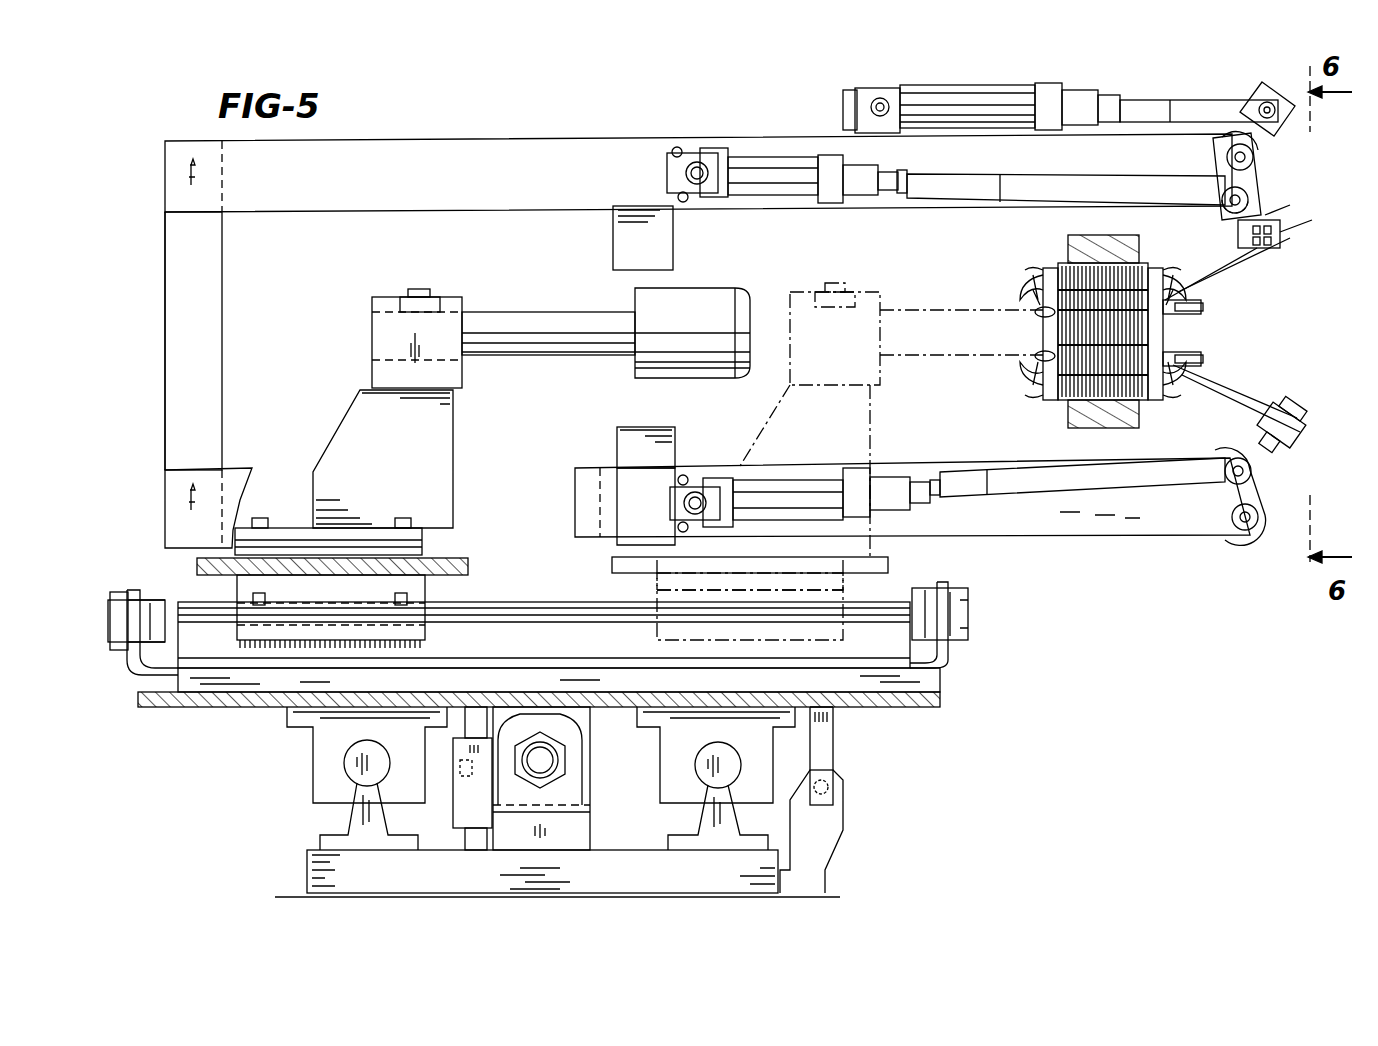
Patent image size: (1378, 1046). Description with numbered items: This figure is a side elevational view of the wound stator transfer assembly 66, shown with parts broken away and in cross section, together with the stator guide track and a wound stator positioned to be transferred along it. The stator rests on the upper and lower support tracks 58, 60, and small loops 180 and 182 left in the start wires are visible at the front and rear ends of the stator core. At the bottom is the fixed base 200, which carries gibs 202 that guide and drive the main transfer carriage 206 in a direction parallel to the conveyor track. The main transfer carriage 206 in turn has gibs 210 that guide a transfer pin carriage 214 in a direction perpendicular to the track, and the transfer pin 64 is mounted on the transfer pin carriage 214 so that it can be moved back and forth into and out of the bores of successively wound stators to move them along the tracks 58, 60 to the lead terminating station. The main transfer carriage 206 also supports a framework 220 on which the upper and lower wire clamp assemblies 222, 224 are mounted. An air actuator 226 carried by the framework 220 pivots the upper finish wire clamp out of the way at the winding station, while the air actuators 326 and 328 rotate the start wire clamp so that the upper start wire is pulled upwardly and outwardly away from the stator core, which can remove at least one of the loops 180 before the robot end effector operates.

The upper wire clamp assembly 222 is at (777, 115).
The air actuator 226 is at (933, 95).
The transfer pin 64 is at (707, 298).
The air actuator 326 is at (782, 185).
The upper support track 58 is at (1062, 250).
The framework 220 is at (205, 338).
The front loops 180 is at (1048, 358).
The rear loops 182 is at (1170, 358).
The lower support track 60 is at (1085, 420).
The air actuator 328 is at (793, 478).
The transfer pin carriage 214 is at (468, 558).
The gibs 210 is at (566, 610).
The lower wire clamp assembly 224 is at (1068, 542).
The transfer assembly 66 is at (948, 691).
The main transfer carriage 206 is at (228, 710).
The gibs 202 is at (343, 764).
The fixed base 200 is at (310, 878).